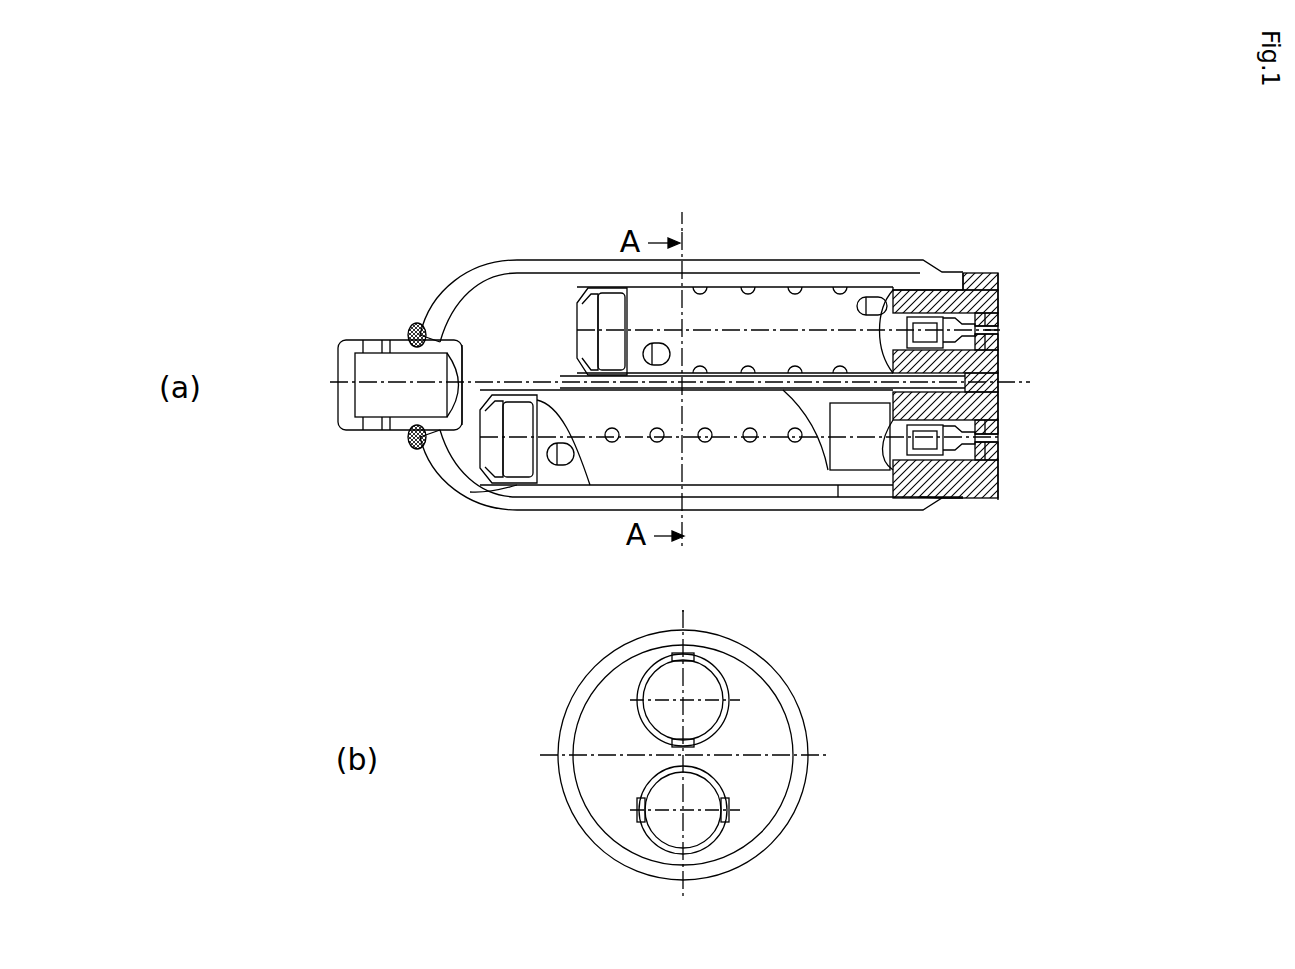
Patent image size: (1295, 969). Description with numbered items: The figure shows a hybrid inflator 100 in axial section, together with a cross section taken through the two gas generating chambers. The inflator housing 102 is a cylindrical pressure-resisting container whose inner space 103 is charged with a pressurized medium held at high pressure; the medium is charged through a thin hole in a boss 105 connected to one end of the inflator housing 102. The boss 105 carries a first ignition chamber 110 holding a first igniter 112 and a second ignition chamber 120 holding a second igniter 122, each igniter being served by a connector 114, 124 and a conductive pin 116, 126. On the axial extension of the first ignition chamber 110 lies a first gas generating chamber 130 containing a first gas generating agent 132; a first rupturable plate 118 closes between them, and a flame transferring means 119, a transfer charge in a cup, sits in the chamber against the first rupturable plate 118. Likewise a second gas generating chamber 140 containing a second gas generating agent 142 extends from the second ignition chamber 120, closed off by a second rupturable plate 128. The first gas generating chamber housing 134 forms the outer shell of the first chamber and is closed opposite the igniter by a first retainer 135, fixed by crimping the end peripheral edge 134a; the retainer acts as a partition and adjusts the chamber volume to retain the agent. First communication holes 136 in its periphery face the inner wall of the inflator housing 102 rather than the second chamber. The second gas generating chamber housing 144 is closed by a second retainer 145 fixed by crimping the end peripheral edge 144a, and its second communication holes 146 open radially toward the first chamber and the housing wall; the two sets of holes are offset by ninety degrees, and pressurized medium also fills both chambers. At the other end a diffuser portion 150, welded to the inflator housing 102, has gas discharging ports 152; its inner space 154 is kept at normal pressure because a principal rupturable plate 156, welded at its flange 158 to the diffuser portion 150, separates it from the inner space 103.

The hybrid inflator 100 is at (624, 205).
The inflator housing 102 is at (515, 260).
The inner space 103 is at (527, 307).
The boss 105 is at (990, 268).
The first ignition chamber 110 is at (1010, 438).
The first igniter 112 is at (940, 495).
The connector 114 is at (1000, 418).
The conductive pin 116 is at (1000, 482).
The first rupturable plate 118 is at (888, 478).
The flame transferring means 119 is at (860, 458).
The second ignition chamber 120 is at (1010, 325).
The second igniter 122 is at (924, 328).
The connector 124 is at (1000, 312).
The conductive pin 126 is at (1000, 350).
The second rupturable plate 128 is at (885, 290).
The first gas generating chamber 130 is at (746, 497).
The first gas generating agent 132 is at (560, 462).
The first gas generating chamber housing 134 is at (838, 508).
The end peripheral edge 134a is at (470, 492).
The first retainer 135 is at (512, 488).
The first communication holes 136 is at (612, 442).
The second gas generating chamber 140 is at (720, 278).
The second gas generating agent 142 is at (700, 372).
The second gas generating chamber housing 144 is at (852, 286).
The end peripheral edge 144a is at (580, 376).
The second retainer 145 is at (580, 290).
The second communication holes 146 is at (752, 284).
The diffuser portion 150 is at (338, 436).
The gas discharging ports 152 is at (363, 340).
The inner space 154 is at (407, 385).
The principal rupturable plate 156 is at (417, 322).
The flange 158 is at (430, 348).